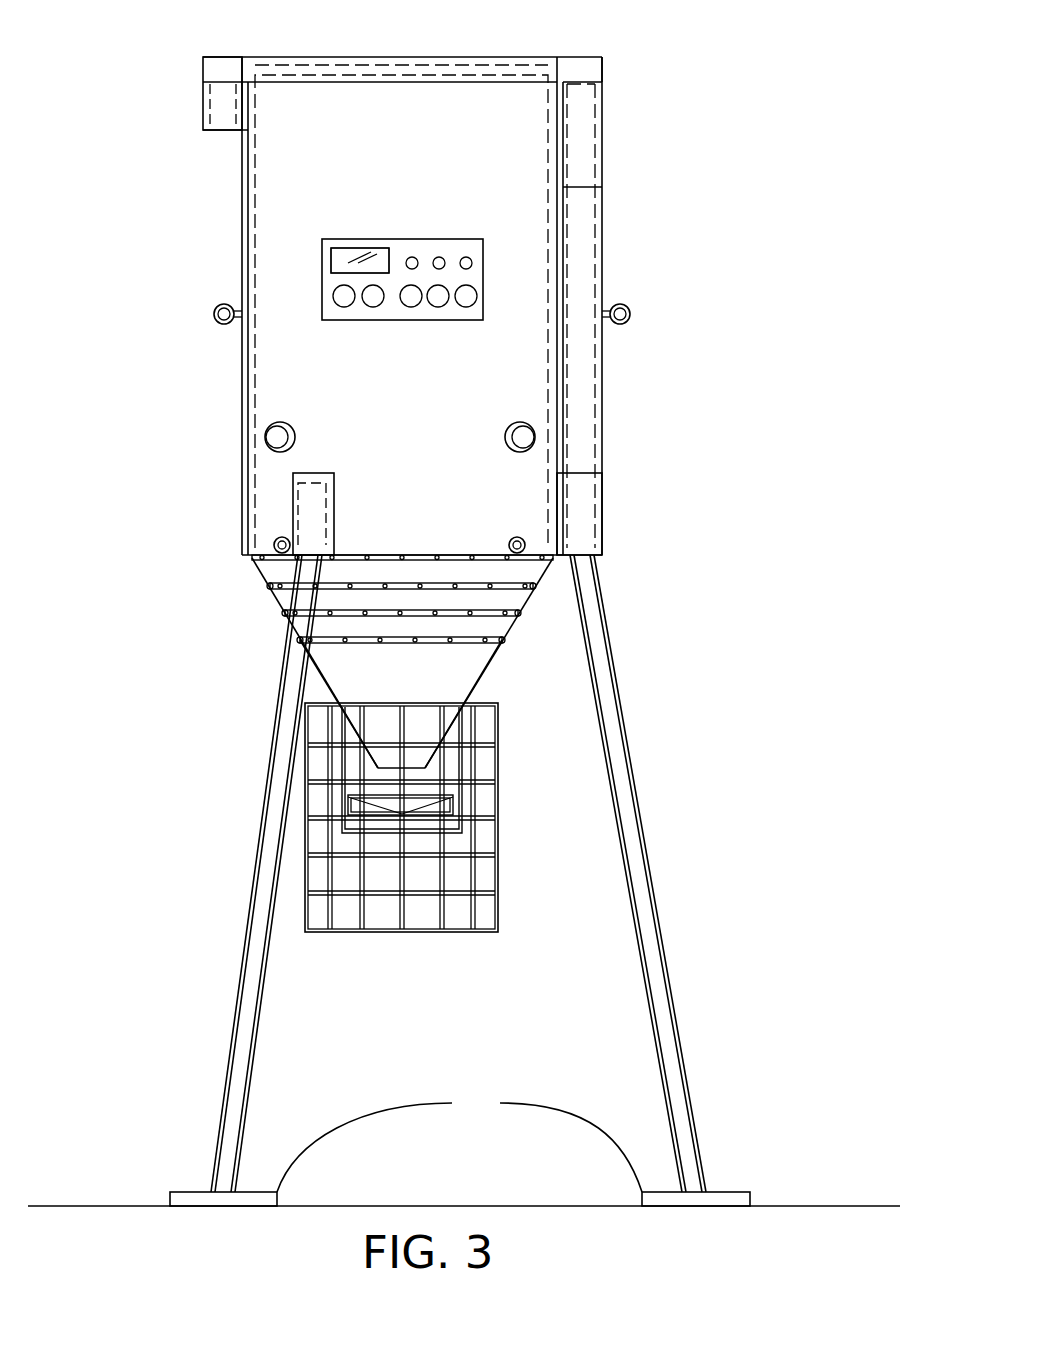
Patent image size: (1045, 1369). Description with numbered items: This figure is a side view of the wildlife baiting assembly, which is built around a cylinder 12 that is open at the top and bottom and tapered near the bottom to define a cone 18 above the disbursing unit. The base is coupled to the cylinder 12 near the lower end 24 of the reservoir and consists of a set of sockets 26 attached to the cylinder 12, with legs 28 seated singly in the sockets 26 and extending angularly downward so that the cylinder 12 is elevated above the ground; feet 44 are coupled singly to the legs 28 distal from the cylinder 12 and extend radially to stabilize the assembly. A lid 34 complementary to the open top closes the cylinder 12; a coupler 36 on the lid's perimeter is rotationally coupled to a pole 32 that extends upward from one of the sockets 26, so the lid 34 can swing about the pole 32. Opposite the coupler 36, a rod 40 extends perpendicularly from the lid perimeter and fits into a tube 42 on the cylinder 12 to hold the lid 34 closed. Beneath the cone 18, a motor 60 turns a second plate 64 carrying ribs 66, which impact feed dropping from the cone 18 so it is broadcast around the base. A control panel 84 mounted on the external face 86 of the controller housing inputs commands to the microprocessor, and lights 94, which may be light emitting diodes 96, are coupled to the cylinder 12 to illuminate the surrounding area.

The cylinder 12 is at (325, 383).
The cone 18 is at (377, 680).
The lower end 24 is at (380, 559).
The sockets 26 is at (293, 510).
The legs 28 is at (658, 976).
The pole 32 is at (583, 124).
The lid 34 is at (330, 57).
The coupler 36 is at (595, 68).
The rod 40 is at (225, 97).
The tube 42 is at (203, 122).
The feet 44 is at (459, 1138).
The motor 60 is at (385, 868).
The second plate 64 is at (457, 816).
The ribs 66 is at (452, 800).
The control panel 84 is at (393, 290).
The external face 86 is at (452, 248).
The lights 94 is at (482, 647).
The light emitting diodes 96 is at (338, 612).